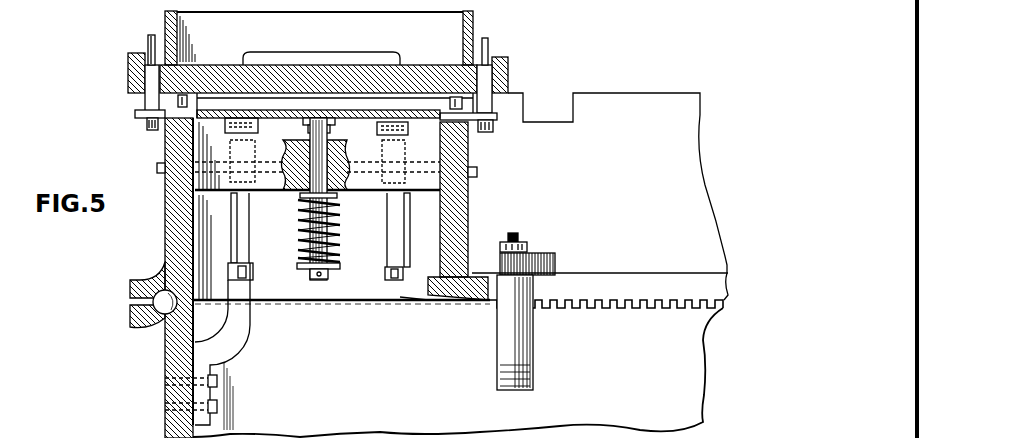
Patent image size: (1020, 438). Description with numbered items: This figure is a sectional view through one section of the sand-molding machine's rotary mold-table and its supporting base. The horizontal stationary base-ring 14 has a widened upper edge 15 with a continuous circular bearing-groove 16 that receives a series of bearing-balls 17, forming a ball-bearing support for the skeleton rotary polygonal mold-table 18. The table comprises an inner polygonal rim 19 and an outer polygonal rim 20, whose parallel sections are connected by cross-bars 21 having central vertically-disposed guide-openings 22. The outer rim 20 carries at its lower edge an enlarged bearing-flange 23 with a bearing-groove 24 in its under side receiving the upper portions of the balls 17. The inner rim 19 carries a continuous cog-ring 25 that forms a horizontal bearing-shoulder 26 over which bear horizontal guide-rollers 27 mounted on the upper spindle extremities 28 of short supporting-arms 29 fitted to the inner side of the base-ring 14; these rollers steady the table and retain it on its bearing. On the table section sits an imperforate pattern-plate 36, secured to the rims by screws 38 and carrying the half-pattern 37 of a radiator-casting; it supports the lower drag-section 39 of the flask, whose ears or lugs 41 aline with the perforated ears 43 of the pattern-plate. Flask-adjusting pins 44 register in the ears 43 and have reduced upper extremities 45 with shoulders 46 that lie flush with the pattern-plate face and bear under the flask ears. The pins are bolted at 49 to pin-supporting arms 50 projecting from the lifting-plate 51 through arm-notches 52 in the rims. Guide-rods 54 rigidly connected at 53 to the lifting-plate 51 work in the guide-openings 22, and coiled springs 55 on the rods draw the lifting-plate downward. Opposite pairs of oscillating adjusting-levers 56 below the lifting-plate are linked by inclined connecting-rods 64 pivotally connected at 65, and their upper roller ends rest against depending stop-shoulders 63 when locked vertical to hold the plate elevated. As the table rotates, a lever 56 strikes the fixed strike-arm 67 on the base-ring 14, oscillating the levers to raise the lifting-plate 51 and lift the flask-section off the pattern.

The base-ring 14 is at (367, 385).
The widened upper edge 15 is at (134, 316).
The bearing-groove 16 is at (163, 330).
The bearing-balls 17 is at (160, 317).
The rotary polygonal mold-table 18 is at (626, 186).
The inner polygonal rim 19 is at (462, 202).
The outer polygonal rim 20 is at (168, 224).
The cross-bars 21 is at (371, 193).
The guide-openings 22 is at (346, 150).
The bearing-flange 23 is at (133, 280).
The bearing-groove 24 is at (165, 272).
The cog-ring 25 is at (470, 304).
The bearing-shoulder 26 is at (478, 268).
The guide-rollers 27 is at (553, 255).
The spindle extremities 28 is at (516, 233).
The supporting-arms 29 is at (525, 345).
The pattern-plate 36 is at (228, 68).
The half-pattern 37 is at (327, 60).
The screws 38 is at (198, 62).
The drag-section 39 is at (405, 12).
The ears or lugs 41 is at (146, 57).
The perforated ears 43 is at (128, 79).
The flask-adjusting pins 44 is at (147, 98).
The reduced upper extremities 45 is at (151, 35).
The shoulders 46 is at (146, 55).
The bolted connection 49 is at (150, 130).
The pin-supporting arms 50 is at (140, 116).
The lifting-plate 51 is at (381, 113).
The arm-notches 52 is at (200, 102).
The connection of guide-rods 53 is at (319, 113).
The guide-rods 54 is at (305, 210).
The coiled springs 55 is at (306, 238).
The oscillating adjusting-levers 56 is at (233, 210).
The stop-shoulders 63 is at (256, 140).
The connecting-rods 64 is at (252, 275).
The pivotal connection 65 is at (238, 272).
The strike-arm 67 is at (248, 338).